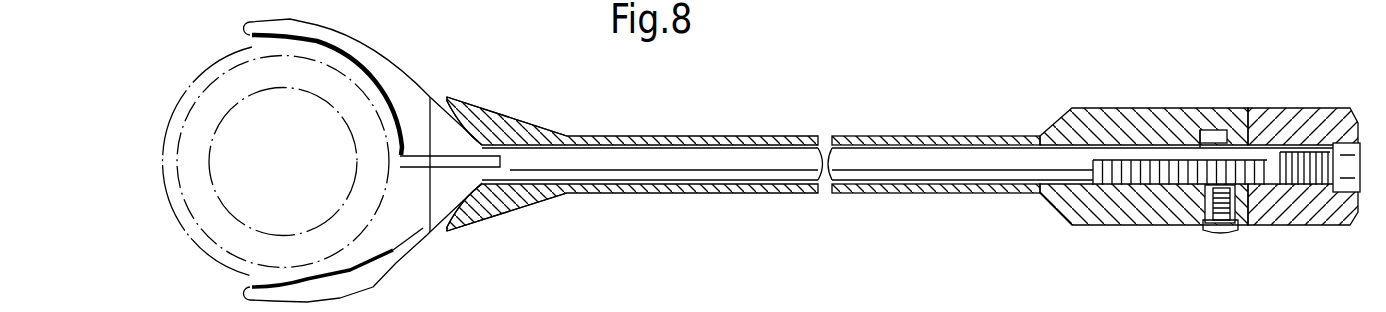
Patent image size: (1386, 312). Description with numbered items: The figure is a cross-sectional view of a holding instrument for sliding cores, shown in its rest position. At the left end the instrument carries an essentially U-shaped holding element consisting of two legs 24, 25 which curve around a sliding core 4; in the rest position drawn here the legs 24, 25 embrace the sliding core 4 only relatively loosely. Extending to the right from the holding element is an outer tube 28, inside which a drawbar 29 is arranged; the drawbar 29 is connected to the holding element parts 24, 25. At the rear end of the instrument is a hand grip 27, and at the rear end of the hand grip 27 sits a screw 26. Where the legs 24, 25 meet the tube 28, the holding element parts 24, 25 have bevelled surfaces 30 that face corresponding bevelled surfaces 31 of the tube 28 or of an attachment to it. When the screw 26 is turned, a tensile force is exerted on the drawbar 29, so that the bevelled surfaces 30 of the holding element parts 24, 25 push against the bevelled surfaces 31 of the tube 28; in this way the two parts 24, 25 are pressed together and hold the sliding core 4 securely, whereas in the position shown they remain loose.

The sliding core 4 is at (227, 187).
The leg 24 is at (393, 84).
The leg 25 is at (387, 246).
The screw 26 is at (1307, 110).
The hand grip 27 is at (1143, 110).
The outer tube 28 is at (895, 198).
The drawbar 29 is at (723, 160).
The bevelled surfaces 30 is at (467, 105).
The bevelled surfaces 31 is at (487, 125).